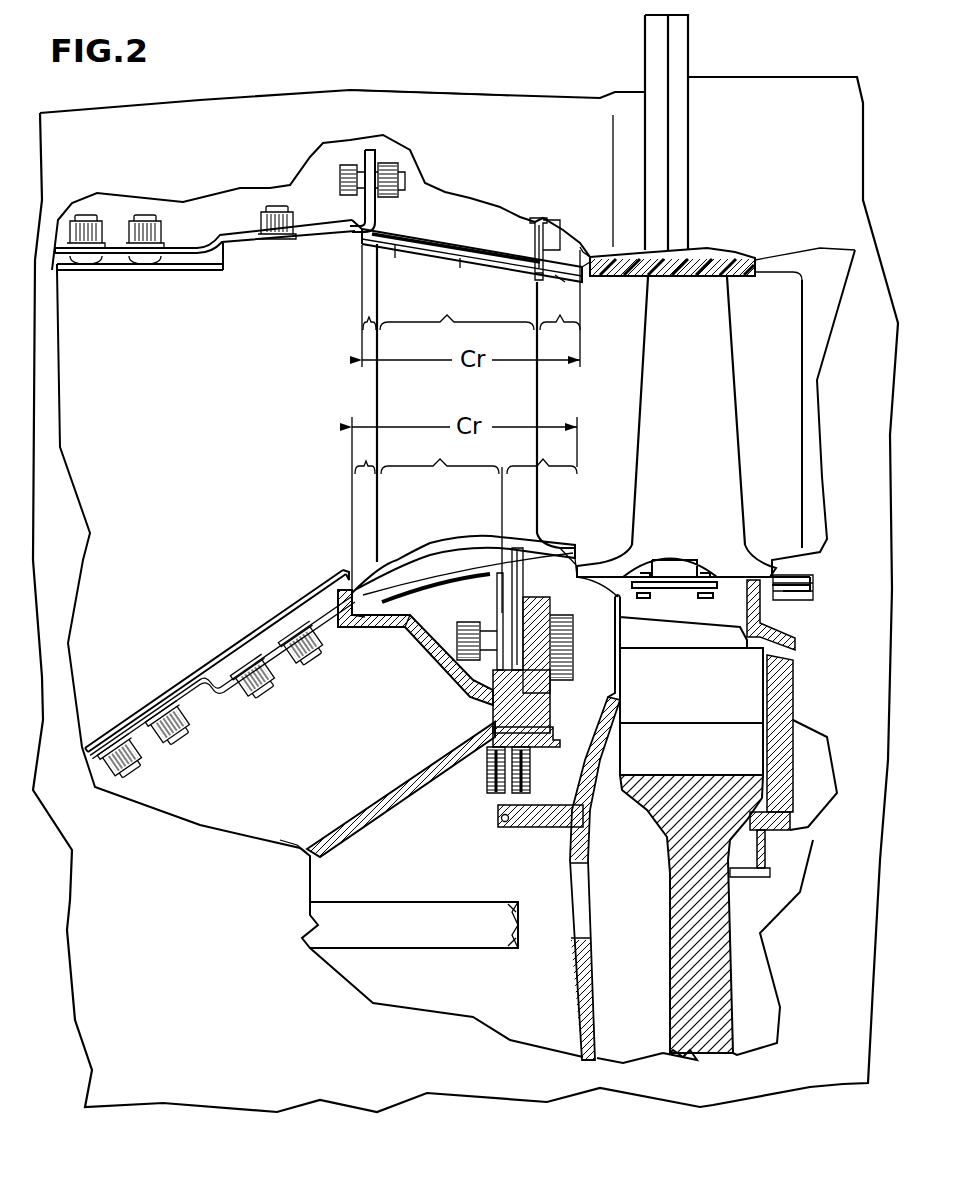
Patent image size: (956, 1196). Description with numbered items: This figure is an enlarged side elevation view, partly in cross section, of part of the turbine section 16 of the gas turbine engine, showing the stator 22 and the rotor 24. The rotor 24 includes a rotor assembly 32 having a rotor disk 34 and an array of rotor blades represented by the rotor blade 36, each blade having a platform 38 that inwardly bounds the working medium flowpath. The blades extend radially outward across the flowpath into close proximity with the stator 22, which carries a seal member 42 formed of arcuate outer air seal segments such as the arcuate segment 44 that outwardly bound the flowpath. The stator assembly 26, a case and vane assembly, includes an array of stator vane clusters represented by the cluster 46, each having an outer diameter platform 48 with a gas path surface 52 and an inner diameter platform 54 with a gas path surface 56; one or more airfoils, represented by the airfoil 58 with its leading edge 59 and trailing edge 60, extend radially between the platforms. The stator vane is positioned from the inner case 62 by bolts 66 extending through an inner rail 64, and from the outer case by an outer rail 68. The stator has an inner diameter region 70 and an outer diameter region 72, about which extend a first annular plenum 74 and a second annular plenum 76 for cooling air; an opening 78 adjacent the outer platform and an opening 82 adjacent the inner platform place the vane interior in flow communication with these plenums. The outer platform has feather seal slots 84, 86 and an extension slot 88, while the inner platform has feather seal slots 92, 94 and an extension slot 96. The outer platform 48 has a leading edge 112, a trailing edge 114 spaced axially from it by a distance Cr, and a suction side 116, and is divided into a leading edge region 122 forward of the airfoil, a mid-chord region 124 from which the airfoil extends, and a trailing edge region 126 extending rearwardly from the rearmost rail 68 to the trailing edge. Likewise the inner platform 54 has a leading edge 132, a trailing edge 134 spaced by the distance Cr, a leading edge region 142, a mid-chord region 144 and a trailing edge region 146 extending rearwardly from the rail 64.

The turbine section 16 is at (488, 73).
The stator 22 is at (540, 163).
The rotor 24 is at (792, 696).
The stator assembly 26 is at (648, 250).
The rotor assembly 32 is at (737, 963).
The rotor disk 34 is at (700, 890).
The rotor blade 36 is at (688, 411).
The platform 38 is at (735, 557).
The seal member 42 is at (723, 245).
The arcuate segment 44 is at (737, 278).
The stator vane cluster 46 is at (352, 313).
The outer diameter platform 48 is at (558, 284).
The gas path surface 52 is at (374, 268).
The inner diameter platform 54 is at (562, 534).
The gas path surface 56 is at (392, 562).
The airfoil 58 is at (476, 428).
The leading edge 59 is at (378, 376).
The trailing edge 60 is at (539, 400).
The inner case 62 is at (433, 760).
The inner rail 64 is at (510, 588).
The bolts 66 is at (466, 677).
The outer rail 68 is at (547, 240).
The inner diameter region 70 is at (317, 733).
The outer diameter region 72 is at (417, 200).
The first annular plenum 74 is at (472, 235).
The second annular plenum 76 is at (427, 611).
The opening 78 is at (430, 230).
The opening 82 is at (450, 593).
The feather seal slot 84 is at (534, 248).
The feather seal slot 86 is at (398, 248).
The extension slot 88 is at (583, 285).
The feather seal slot 92 is at (613, 608).
The feather seal slot 94 is at (366, 616).
The extension slot 96 is at (574, 548).
The leading edge 112 is at (352, 232).
The trailing edge 114 is at (596, 276).
The suction side 116 is at (462, 270).
The leading edge region 122 is at (372, 325).
The mid-chord region 124 is at (457, 334).
The trailing edge region 126 is at (560, 333).
The leading edge 132 is at (357, 590).
The trailing edge 134 is at (612, 560).
The leading edge region 142 is at (368, 466).
The mid-chord region 144 is at (440, 455).
The trailing edge region 146 is at (565, 465).